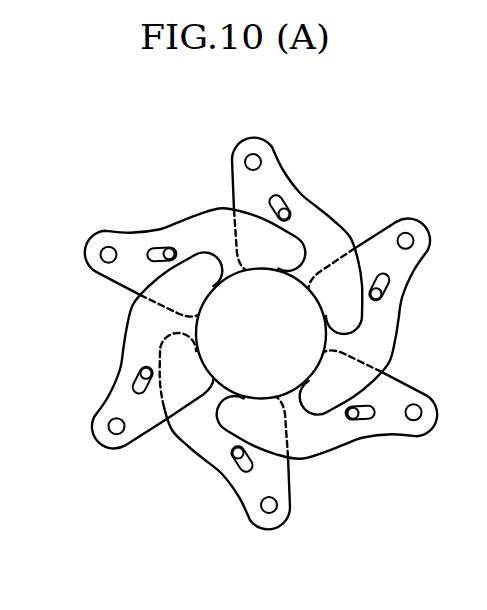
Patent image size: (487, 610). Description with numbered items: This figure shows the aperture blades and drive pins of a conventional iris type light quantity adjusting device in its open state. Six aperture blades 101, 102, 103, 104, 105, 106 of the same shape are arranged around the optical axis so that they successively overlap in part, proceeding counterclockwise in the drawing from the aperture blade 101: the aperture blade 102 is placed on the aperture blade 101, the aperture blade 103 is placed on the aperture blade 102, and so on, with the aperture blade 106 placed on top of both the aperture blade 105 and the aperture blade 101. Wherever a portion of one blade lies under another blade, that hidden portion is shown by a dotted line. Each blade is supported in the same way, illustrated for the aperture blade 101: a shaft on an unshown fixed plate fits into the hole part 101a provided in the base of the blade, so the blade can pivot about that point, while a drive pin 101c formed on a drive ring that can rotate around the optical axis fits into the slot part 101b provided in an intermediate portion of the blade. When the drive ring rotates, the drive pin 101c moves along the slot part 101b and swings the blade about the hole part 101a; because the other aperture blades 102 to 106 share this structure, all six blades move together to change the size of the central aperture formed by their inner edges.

The aperture blade 101 is at (228, 465).
The hole part 101a is at (277, 511).
The slot part 101b is at (231, 484).
The drive pin 101c is at (230, 465).
The aperture blade 102 is at (414, 435).
The aperture blade 103 is at (409, 219).
The aperture blade 104 is at (246, 140).
The aperture blade 105 is at (92, 254).
The aperture blade 106 is at (107, 446).